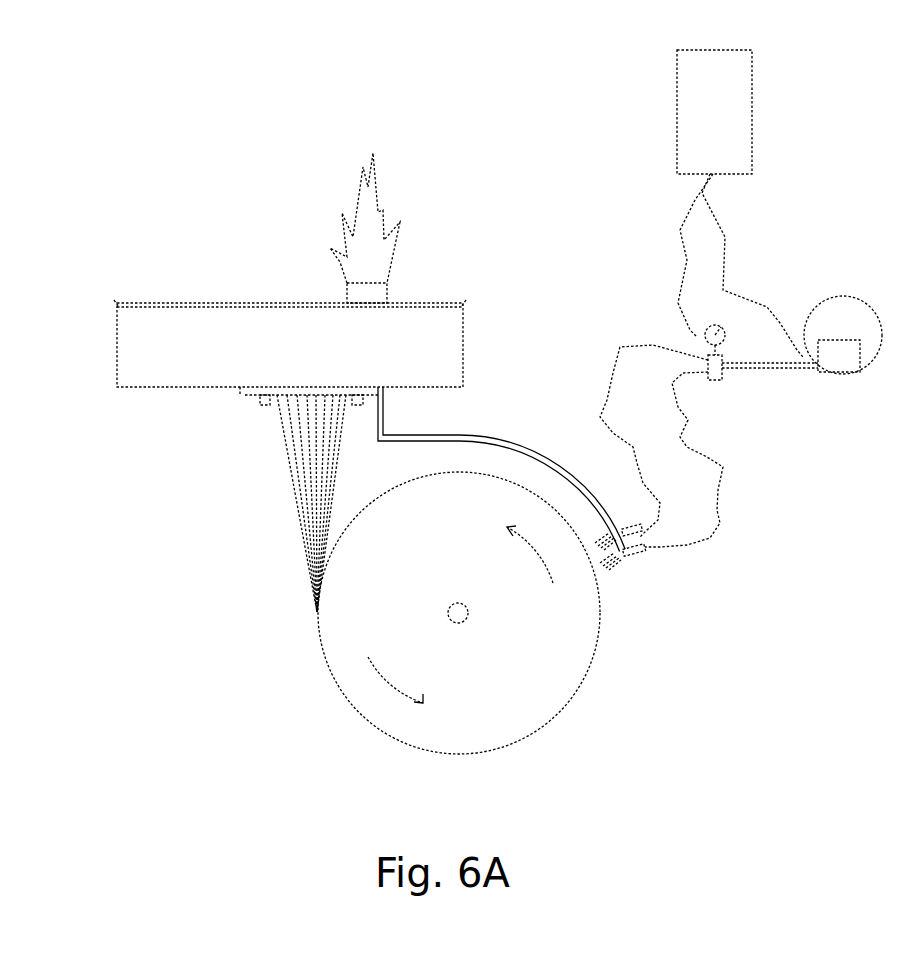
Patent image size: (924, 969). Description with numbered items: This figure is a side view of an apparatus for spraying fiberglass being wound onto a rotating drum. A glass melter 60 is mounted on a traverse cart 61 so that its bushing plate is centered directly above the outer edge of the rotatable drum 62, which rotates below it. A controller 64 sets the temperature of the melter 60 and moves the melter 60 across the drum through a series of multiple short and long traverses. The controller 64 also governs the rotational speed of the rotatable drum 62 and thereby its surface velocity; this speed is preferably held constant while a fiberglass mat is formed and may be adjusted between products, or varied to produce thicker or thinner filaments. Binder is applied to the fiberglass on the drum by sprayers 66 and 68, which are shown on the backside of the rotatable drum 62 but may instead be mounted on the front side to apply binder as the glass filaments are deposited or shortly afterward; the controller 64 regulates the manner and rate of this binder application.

The glass melter 60 is at (245, 288).
The traverse cart 61 is at (242, 395).
The rotatable drum 62 is at (485, 622).
The controller 64 is at (663, 97).
The sprayer 66 is at (633, 535).
The sprayer 68 is at (630, 561).